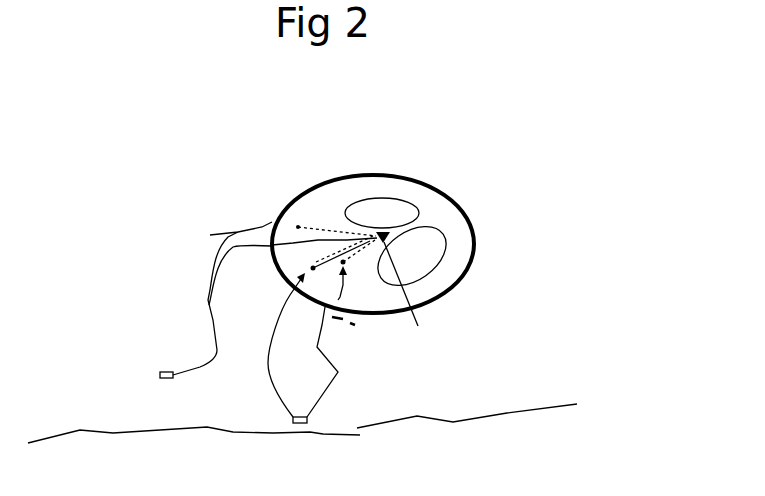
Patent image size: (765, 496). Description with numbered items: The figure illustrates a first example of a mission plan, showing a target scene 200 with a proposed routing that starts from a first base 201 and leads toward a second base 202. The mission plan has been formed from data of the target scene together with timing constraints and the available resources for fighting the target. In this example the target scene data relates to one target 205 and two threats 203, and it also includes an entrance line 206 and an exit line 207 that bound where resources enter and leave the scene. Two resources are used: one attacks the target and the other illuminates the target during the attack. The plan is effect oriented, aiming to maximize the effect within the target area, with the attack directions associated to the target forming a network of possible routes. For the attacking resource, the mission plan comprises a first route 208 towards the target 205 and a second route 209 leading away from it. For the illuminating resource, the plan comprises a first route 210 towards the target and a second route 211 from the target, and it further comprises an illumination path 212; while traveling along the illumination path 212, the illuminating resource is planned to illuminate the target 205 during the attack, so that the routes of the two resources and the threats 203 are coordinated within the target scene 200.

The target scene 200 is at (395, 162).
The first base 201 is at (293, 416).
The second sensor 202 is at (160, 375).
The threats 203 is at (412, 203).
The target 205 is at (422, 291).
The entrance line 206 is at (276, 278).
The exit line 207 is at (278, 210).
The first route 208 is at (338, 300).
The second route 209 is at (272, 234).
The first route 210 is at (307, 300).
The second route 211 is at (297, 227).
The illumination path 212 is at (322, 233).